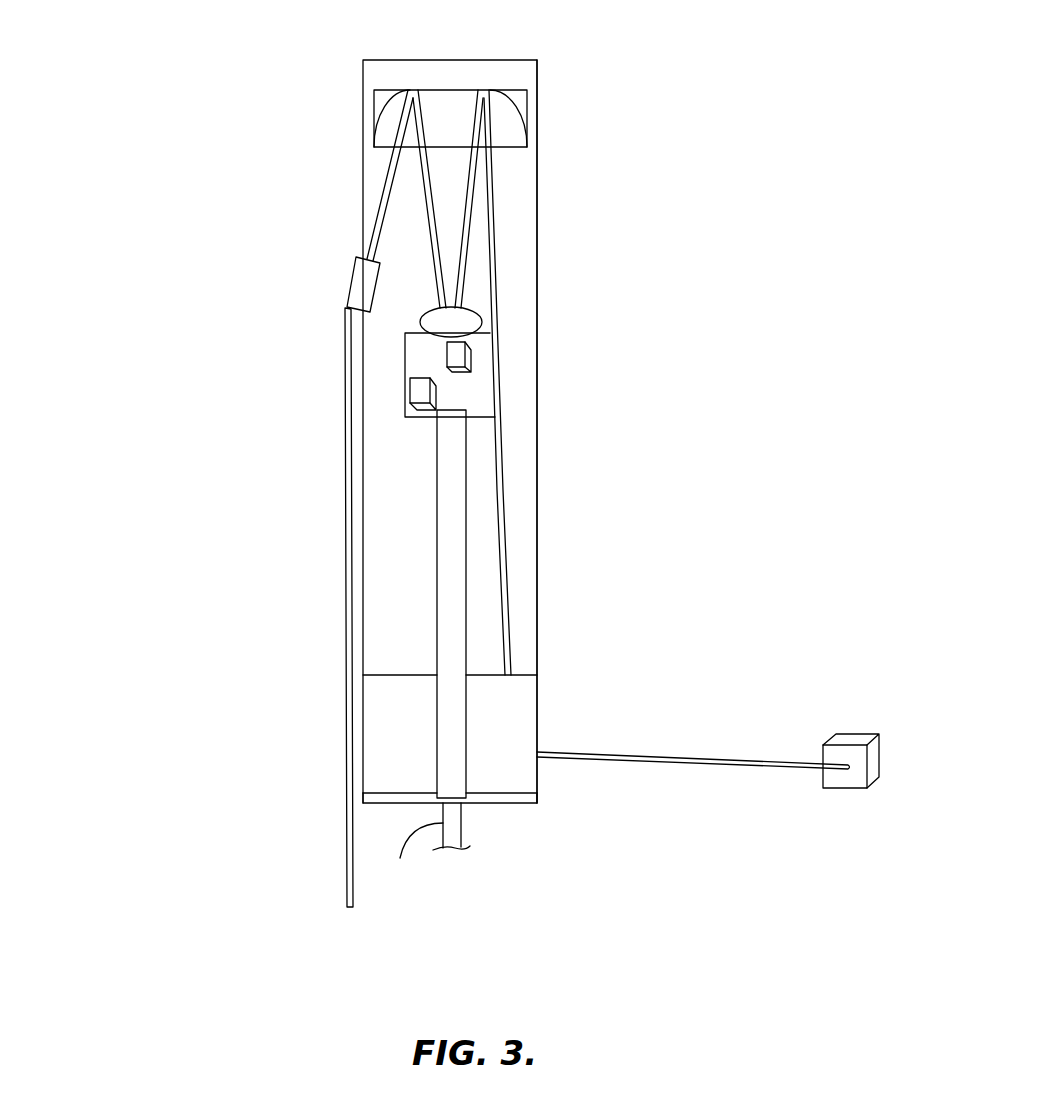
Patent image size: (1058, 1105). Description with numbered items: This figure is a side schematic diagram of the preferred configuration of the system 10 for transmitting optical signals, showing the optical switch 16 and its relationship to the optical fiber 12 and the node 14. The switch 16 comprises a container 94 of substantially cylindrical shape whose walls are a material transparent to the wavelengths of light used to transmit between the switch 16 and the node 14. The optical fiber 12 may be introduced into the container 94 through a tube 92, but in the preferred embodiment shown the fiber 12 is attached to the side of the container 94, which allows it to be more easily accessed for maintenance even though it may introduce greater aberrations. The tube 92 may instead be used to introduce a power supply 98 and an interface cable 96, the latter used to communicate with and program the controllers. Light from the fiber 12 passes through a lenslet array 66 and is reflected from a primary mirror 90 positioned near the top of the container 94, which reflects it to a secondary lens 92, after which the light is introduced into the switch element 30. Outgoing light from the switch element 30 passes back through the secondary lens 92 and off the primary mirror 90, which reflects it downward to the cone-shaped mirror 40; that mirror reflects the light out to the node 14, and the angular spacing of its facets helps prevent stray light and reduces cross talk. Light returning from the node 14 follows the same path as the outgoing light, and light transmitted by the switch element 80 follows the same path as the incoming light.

The system for transmitting optical signals 10 is at (150, 157).
The optical fiber 12 is at (344, 438).
The node 14 is at (861, 740).
The optical switch 16 is at (360, 97).
The switch element 30 is at (417, 396).
The cone-shaped mirror 40 is at (512, 805).
The lenslet array 66 is at (356, 280).
The switch element 80 is at (465, 358).
The primary mirror 90 is at (470, 90).
The tube 92 is at (470, 307).
The container 94 is at (538, 84).
The interface cable 96 is at (457, 825).
The power supply 98 is at (415, 859).